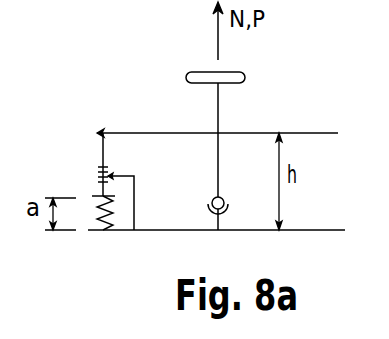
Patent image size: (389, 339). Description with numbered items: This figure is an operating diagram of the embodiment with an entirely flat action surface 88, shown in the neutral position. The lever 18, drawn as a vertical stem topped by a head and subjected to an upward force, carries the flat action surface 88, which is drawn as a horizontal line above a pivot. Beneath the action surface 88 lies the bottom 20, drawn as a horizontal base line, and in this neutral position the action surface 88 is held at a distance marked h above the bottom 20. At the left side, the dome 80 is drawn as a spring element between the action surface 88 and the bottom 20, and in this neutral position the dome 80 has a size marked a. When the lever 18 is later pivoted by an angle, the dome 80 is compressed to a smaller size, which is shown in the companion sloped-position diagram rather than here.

The lever 18 is at (218, 113).
The bottom 20 is at (311, 230).
The dome 80 is at (95, 208).
The action surface 88 is at (132, 133).